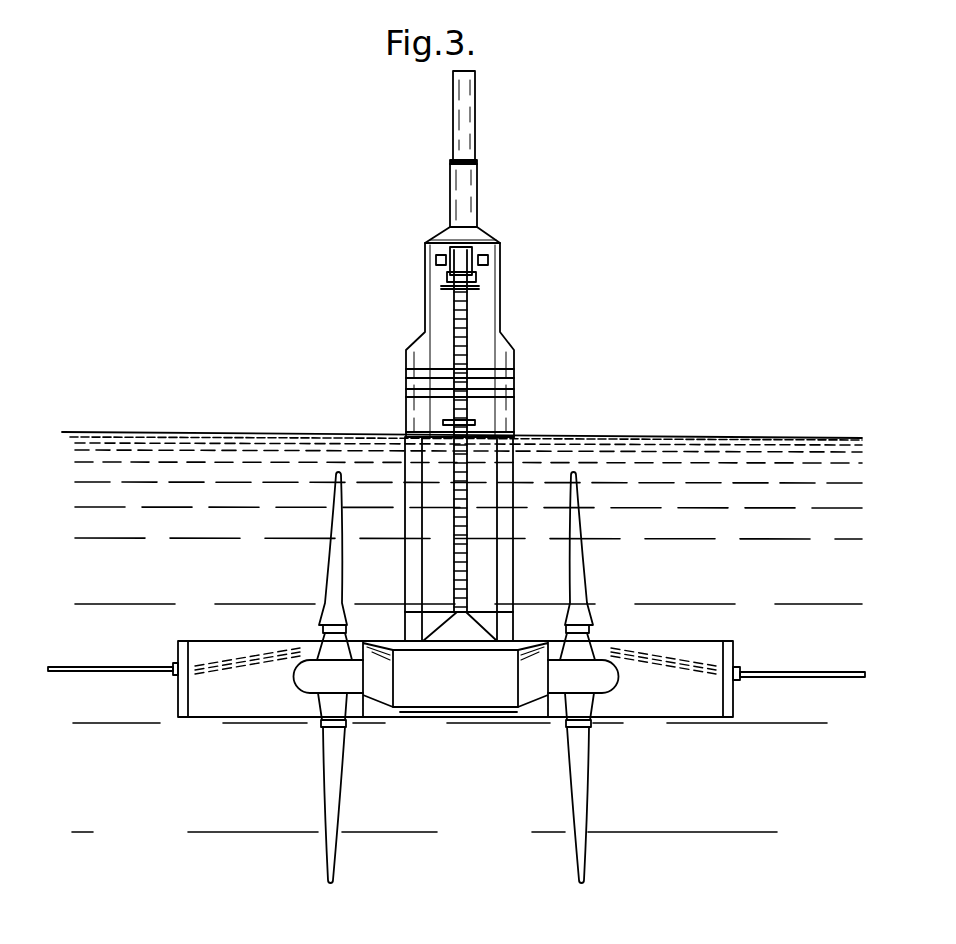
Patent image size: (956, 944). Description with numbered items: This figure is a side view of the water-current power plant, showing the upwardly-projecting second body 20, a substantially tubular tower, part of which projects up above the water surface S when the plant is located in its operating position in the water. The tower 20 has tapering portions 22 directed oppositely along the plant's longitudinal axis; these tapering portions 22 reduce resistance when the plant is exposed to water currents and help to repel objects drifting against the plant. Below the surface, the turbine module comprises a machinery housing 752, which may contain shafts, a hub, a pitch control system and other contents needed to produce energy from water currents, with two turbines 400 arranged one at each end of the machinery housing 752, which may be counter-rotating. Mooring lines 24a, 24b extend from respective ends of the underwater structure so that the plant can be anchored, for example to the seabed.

The second body 20 is at (527, 406).
The tapering portions 22 is at (412, 357).
The water surface S is at (675, 446).
The mooring line 24a is at (137, 667).
The mooring line 24b is at (782, 670).
The turbines 400 is at (323, 770).
The machinery housing 752 is at (427, 720).